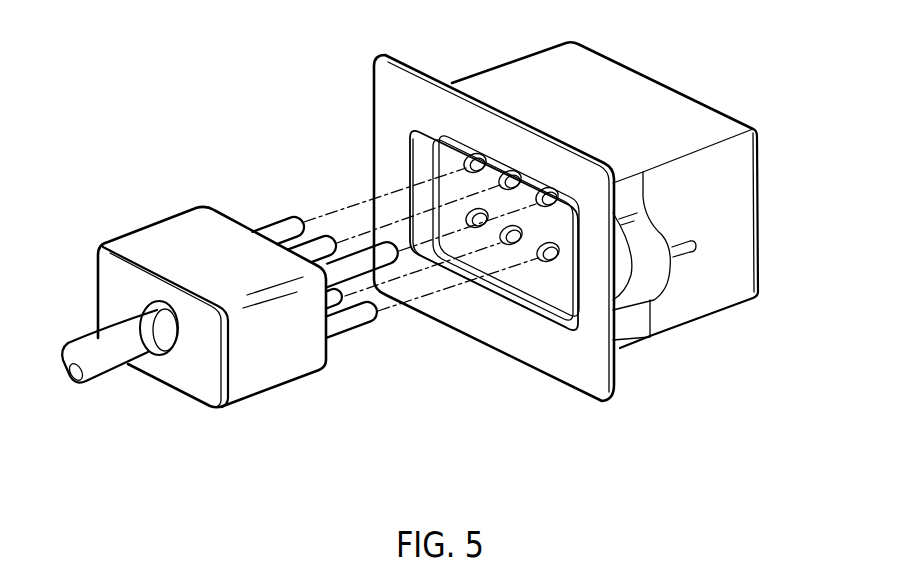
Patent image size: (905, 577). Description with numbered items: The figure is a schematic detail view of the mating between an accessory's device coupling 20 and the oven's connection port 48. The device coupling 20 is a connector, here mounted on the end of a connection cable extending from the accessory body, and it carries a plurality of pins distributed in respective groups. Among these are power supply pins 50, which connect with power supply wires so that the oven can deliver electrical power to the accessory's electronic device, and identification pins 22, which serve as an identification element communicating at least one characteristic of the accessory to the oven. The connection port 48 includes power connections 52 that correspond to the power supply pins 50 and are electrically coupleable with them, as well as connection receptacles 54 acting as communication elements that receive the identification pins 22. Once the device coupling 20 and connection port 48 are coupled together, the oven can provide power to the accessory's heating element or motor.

The device coupling 20 is at (282, 396).
The identification pins 22 is at (335, 302).
The power supply pins 50 is at (313, 246).
The connection port 48 is at (553, 396).
The power connections 52 is at (465, 210).
The connection receptacles 54 is at (466, 158).